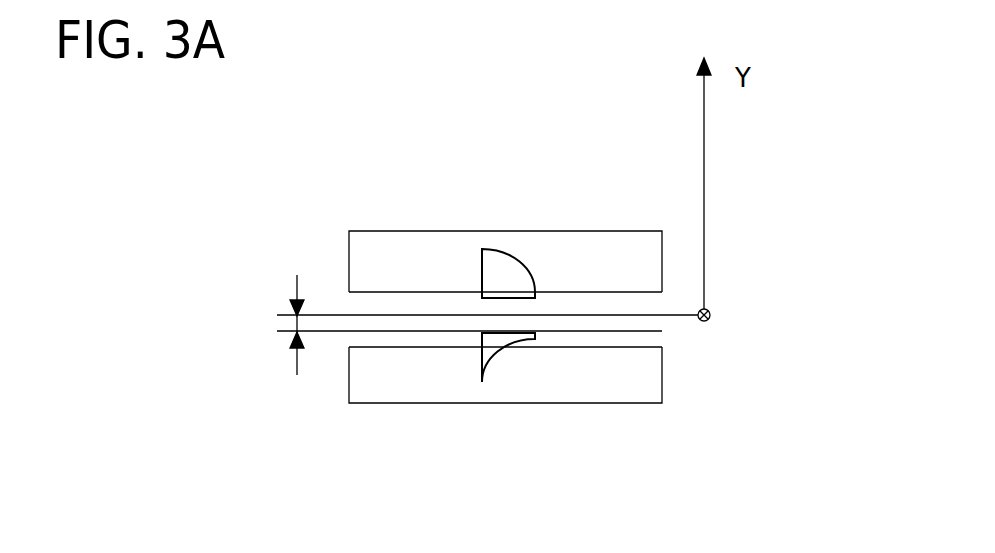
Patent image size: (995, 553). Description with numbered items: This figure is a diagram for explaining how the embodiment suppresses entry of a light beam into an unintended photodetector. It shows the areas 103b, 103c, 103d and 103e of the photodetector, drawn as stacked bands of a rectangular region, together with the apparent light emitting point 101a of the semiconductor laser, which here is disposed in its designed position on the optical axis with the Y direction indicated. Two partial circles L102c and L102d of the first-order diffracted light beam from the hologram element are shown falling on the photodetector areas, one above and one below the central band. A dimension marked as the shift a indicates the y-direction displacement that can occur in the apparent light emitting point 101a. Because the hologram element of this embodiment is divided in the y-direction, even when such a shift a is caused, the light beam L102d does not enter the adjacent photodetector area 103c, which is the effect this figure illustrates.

The partial circle of 1st-order diffracted light beam L102c is at (502, 273).
The partial circle of 1st-order diffracted light beam L102d is at (502, 357).
The area of photodetector 103b is at (640, 248).
The area of photodetector 103c is at (638, 302).
The area of photodetector 103d is at (640, 330).
The area of photodetector 103e is at (633, 385).
The apparent light emitting point 101a is at (711, 320).
The shift a is at (295, 352).